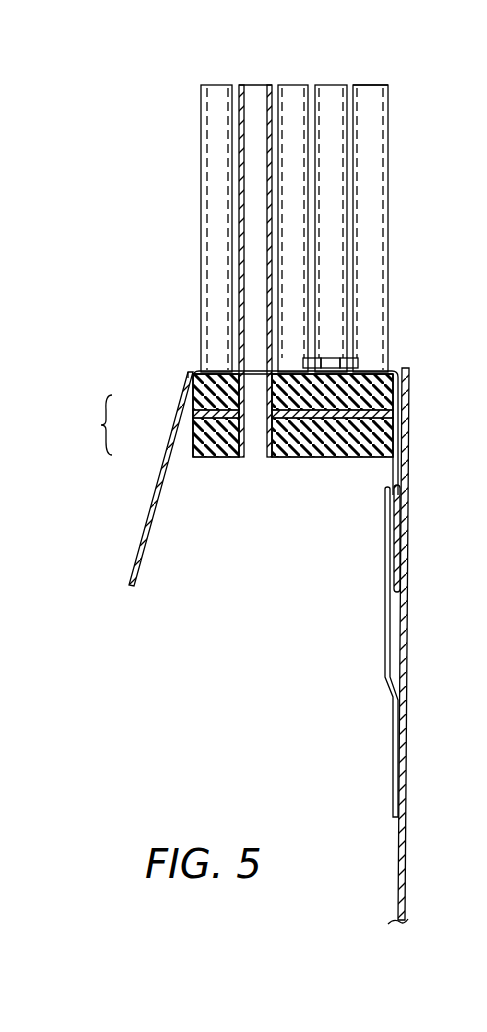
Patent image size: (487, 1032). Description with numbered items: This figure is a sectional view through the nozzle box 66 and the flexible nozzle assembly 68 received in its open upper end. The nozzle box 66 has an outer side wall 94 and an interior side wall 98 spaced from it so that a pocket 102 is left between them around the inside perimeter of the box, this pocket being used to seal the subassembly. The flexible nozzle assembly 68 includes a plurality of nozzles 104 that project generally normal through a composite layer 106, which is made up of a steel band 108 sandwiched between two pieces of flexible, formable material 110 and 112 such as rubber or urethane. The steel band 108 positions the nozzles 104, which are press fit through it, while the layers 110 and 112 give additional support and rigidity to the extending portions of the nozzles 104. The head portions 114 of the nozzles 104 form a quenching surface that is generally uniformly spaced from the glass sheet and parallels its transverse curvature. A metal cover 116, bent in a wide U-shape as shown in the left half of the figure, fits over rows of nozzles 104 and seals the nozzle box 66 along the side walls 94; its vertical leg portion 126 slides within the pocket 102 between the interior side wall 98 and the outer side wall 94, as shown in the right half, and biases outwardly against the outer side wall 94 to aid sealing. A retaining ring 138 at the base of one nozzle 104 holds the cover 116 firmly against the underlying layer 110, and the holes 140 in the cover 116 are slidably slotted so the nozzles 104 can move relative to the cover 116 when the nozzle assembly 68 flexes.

The nozzle box 66 is at (403, 848).
The flexible nozzle assembly 68 is at (192, 200).
The side wall 94 is at (409, 620).
The interior side wall 98 is at (385, 675).
The pocket 102 is at (397, 472).
The nozzle 104 is at (388, 256).
The composite layer 106 is at (227, 415).
The steel band 108 is at (197, 415).
The flexible formable material 110 is at (193, 409).
The flexible formable material 112 is at (195, 436).
The head portion 114 is at (389, 88).
The cover 116 is at (190, 372).
The vertical leg portion 126 is at (148, 508).
The retaining ring 138 is at (358, 361).
The hole 140 is at (246, 383).